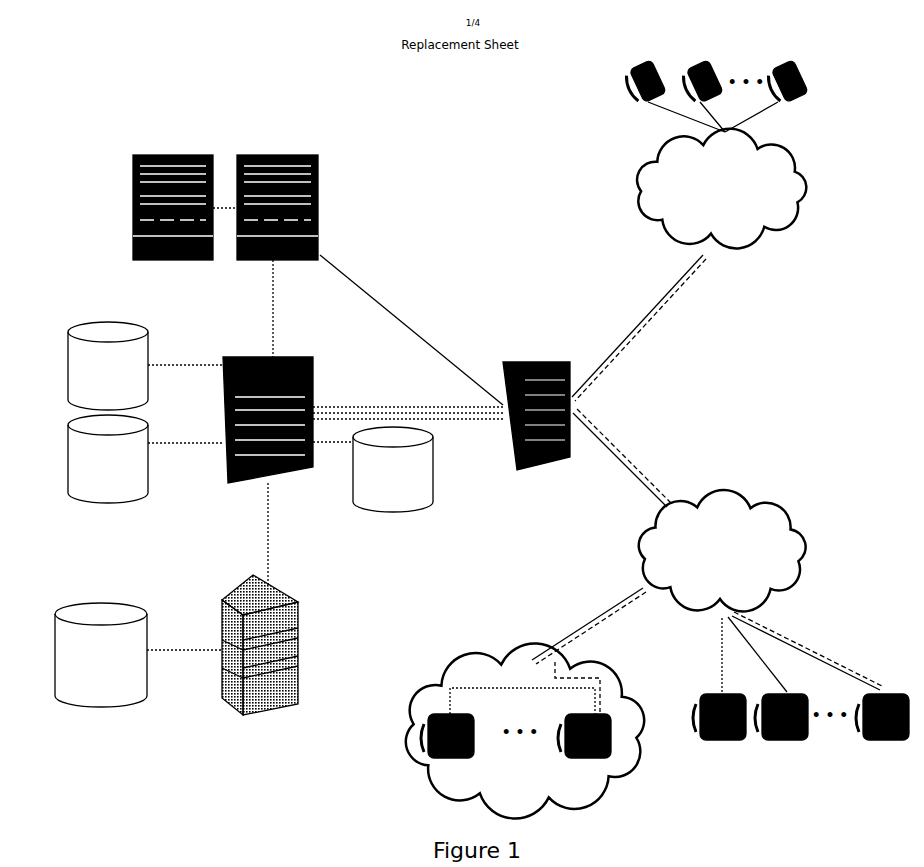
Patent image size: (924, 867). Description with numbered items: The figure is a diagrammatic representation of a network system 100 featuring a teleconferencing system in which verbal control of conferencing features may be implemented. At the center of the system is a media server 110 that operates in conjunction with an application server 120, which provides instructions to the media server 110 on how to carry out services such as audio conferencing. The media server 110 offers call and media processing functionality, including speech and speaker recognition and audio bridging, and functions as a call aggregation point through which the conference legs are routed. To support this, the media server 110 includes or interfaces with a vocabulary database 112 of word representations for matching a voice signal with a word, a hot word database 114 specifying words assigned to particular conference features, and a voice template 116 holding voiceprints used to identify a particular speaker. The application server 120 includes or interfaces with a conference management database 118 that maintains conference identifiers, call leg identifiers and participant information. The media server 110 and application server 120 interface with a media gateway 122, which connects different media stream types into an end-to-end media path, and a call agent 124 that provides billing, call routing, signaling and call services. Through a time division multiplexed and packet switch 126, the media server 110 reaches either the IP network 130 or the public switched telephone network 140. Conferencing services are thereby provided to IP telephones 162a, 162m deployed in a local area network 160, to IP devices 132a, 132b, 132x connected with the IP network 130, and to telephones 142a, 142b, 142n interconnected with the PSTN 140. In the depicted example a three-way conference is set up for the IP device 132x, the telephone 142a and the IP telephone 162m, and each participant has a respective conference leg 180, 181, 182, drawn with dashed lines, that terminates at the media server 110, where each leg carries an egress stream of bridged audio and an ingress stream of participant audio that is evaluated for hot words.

The network system 100 is at (442, 116).
The media server 110 is at (300, 357).
The vocabulary database 112 is at (108, 366).
The hot word database 114 is at (108, 459).
The voice template 116 is at (393, 469).
The conference management database 118 is at (101, 655).
The application server 120 is at (222, 600).
The media gateway 122 is at (318, 185).
The call agent 124 is at (133, 182).
The circuit and packet switch 126 is at (565, 362).
The IP network 130 is at (722, 550).
The IP device 132a is at (727, 740).
The IP device 132b is at (789, 740).
The IP device 132x is at (893, 740).
The public switched telephone network 140 is at (721, 189).
The telephone 142a is at (633, 66).
The telephone 142b is at (690, 66).
The telephone 142n is at (778, 66).
The local area network 160 is at (525, 730).
The IP telephone 162a is at (470, 758).
The IP telephone 162m is at (608, 758).
The conference leg 180 is at (826, 640).
The conference leg 181 is at (660, 106).
The conference leg 182 is at (449, 420).